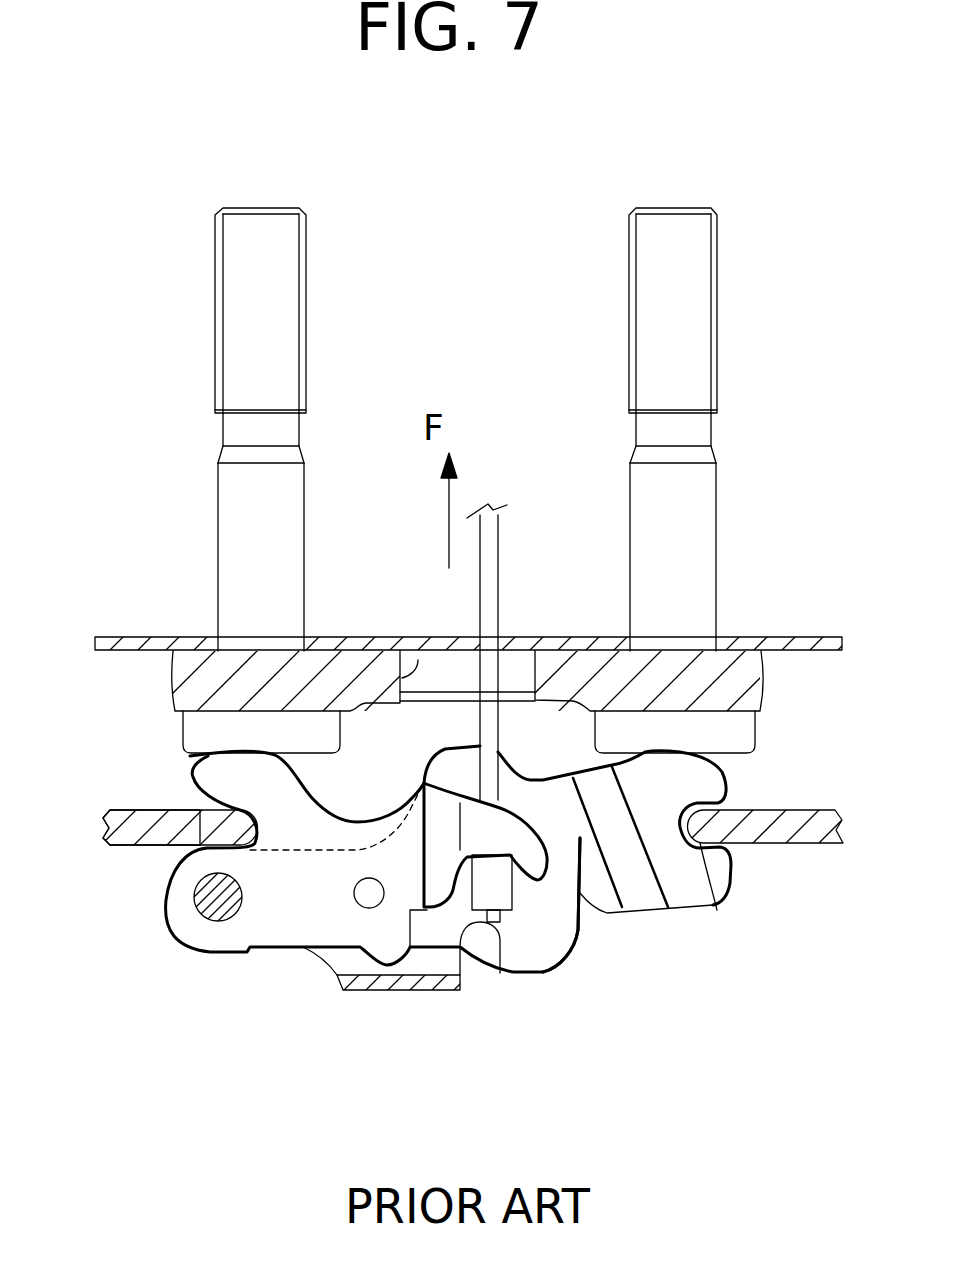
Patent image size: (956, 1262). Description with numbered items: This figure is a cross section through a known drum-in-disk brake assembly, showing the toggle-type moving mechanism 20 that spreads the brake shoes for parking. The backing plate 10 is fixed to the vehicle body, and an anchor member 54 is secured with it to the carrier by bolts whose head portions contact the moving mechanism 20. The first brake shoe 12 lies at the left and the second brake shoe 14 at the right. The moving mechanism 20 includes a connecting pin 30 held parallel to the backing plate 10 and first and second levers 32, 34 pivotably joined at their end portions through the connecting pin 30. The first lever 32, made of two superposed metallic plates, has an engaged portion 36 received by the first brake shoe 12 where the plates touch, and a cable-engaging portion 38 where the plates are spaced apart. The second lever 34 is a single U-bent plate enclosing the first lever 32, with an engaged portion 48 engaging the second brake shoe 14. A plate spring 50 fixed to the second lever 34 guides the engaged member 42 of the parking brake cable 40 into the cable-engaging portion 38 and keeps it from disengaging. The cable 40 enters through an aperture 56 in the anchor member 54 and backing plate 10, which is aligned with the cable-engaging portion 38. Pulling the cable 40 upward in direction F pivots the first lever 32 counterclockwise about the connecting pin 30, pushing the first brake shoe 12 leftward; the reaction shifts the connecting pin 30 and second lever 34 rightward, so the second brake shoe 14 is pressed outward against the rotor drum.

The backing plate 10 is at (115, 637).
The first brake shoe 12 is at (140, 832).
The second brake shoe 14 is at (783, 845).
The toggle-type moving mechanism 20 is at (208, 987).
The connecting pin 30 is at (195, 897).
The first lever 32 is at (307, 913).
The second lever 34 is at (537, 945).
The engaged portion 36 is at (215, 815).
The cable-engaging portion 38 is at (437, 762).
The parking brake cable 40 is at (493, 550).
The engaged member 42 is at (489, 893).
The engaged portion 48 is at (715, 907).
The plate spring 50 is at (585, 900).
The anchor member 54 is at (188, 690).
The aperture 56 is at (420, 660).